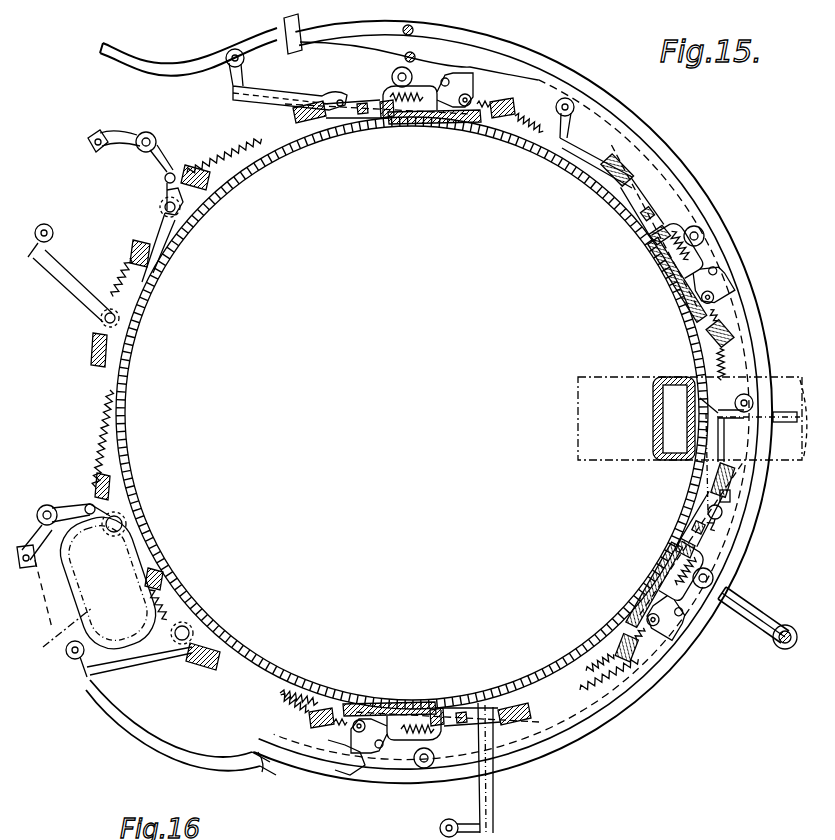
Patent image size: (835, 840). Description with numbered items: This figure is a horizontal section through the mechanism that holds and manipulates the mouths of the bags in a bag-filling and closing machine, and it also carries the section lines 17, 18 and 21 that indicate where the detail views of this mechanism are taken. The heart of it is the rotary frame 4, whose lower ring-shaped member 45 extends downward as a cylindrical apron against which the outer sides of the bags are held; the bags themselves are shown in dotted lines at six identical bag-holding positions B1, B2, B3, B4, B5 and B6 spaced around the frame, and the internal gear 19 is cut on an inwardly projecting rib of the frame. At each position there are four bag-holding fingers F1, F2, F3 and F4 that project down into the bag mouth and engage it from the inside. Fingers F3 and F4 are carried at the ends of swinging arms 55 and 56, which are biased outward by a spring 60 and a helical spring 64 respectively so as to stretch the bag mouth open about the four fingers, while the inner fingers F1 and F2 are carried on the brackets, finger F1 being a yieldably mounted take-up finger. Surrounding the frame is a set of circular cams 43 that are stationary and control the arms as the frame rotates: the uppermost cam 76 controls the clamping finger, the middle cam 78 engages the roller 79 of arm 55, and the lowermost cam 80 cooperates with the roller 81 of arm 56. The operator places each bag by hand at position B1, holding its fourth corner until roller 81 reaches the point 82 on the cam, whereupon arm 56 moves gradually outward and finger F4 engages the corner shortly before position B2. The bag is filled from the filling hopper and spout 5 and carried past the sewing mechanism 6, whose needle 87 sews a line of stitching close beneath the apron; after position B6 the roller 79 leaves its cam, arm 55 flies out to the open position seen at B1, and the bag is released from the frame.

The rotary frame 4 is at (140, 398).
The filling hopper and spout 5 is at (36, 653).
The sewing mechanism 6 is at (660, 466).
The section line 17 is at (518, 642).
The section line 18 is at (414, 618).
The internal gear 19 is at (575, 398).
The section line 21 is at (770, 245).
The circular cams 43 is at (567, 61).
The ring-shaped member 45 is at (282, 665).
The arm 55 is at (262, 92).
The arm 56 is at (440, 95).
The spring 60 is at (122, 272).
The helical spring 64 is at (268, 140).
The cam 76 is at (338, 752).
The cam 78 is at (308, 50).
The roller 79 is at (228, 64).
The cam 80 is at (181, 58).
The roller 81 is at (392, 77).
The point on cam 82 is at (262, 750).
The sewing machine needle 87 is at (762, 420).
The bag position B1 is at (345, 822).
The bag position B2 is at (32, 627).
The bag position B3 is at (45, 225).
The bag position B4 is at (370, 128).
The bag position B5 is at (668, 282).
The bag position B6 is at (652, 584).
The bag-holding finger F1 is at (476, 125).
The bag-holding finger F2 is at (138, 324).
The bag-holding finger F3 is at (236, 95).
The bag-holding finger F4 is at (672, 540).